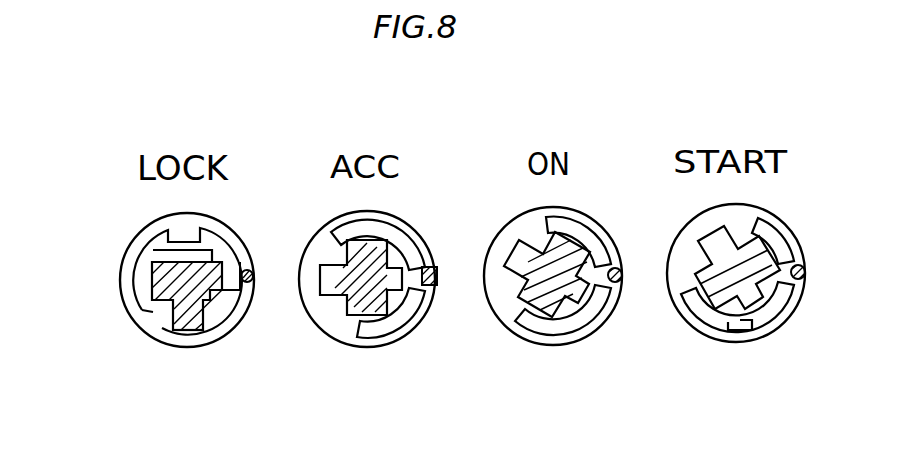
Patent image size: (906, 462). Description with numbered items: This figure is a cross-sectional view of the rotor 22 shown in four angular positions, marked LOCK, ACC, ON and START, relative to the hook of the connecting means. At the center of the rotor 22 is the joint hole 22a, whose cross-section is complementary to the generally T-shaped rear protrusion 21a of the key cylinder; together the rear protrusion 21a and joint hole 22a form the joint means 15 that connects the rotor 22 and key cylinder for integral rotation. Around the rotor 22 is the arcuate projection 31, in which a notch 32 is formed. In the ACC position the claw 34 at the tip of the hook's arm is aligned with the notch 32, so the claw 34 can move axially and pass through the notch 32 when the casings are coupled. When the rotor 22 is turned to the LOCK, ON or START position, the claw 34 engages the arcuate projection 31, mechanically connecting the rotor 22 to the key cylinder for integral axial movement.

The joint means 15 is at (122, 338).
The rear protrusion 21a is at (147, 273).
The rotor 22 is at (167, 333).
The joint hole 22a is at (200, 348).
The arcuate projection 31 is at (133, 245).
The notch 32 is at (192, 230).
The claw 34 is at (237, 298).